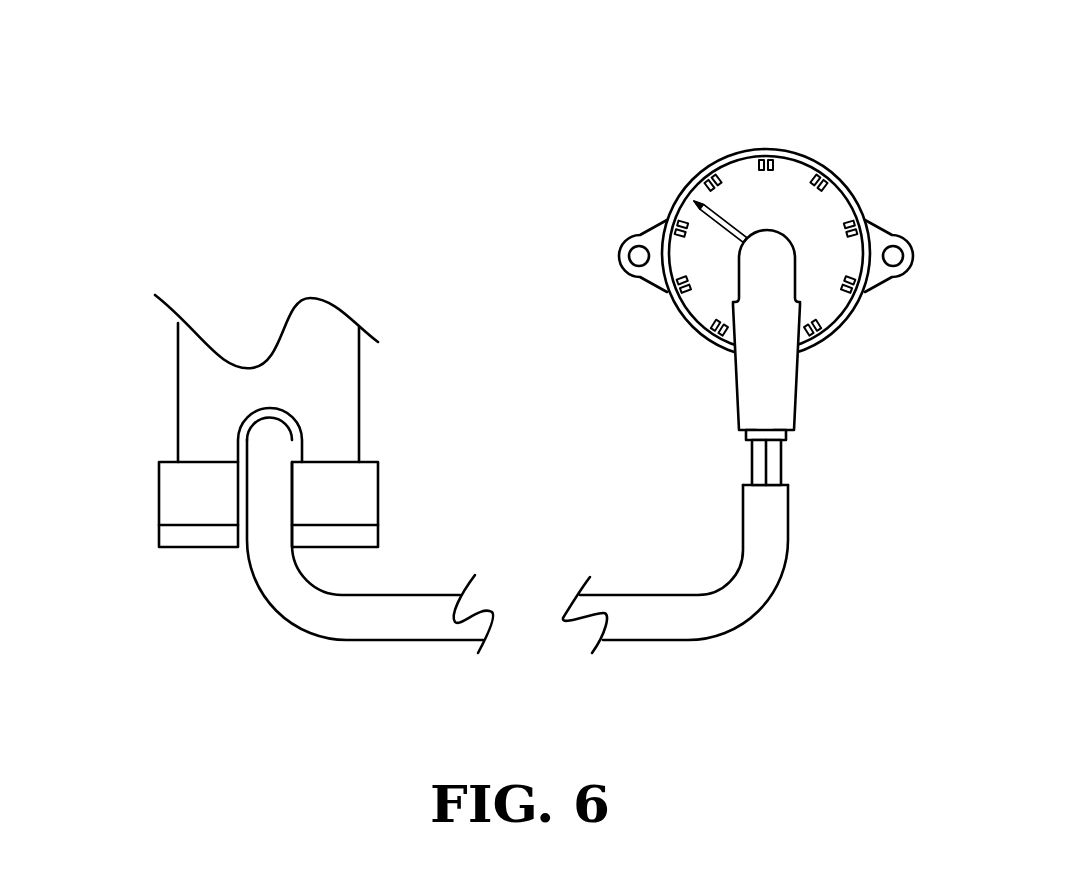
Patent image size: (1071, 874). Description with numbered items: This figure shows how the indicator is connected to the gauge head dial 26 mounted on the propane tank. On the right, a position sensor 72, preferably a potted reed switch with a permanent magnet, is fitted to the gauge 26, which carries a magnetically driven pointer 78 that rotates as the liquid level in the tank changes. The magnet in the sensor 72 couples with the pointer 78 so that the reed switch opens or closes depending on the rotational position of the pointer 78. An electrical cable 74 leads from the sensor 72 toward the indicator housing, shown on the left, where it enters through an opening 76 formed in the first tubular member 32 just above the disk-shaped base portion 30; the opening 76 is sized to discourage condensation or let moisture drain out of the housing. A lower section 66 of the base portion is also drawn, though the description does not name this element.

The gauge head dial 26 is at (852, 156).
The base portion 30 is at (378, 490).
The first tubular member 32 is at (178, 406).
The block lower section / base plate 66 is at (378, 538).
The position sensor 72 is at (775, 397).
The electrical cable 74 is at (295, 597).
The opening 76 is at (285, 408).
The magnetically driven pointer 78 is at (727, 217).